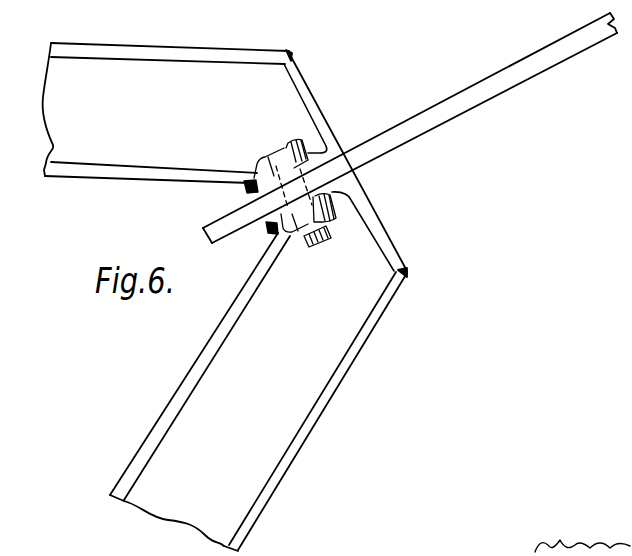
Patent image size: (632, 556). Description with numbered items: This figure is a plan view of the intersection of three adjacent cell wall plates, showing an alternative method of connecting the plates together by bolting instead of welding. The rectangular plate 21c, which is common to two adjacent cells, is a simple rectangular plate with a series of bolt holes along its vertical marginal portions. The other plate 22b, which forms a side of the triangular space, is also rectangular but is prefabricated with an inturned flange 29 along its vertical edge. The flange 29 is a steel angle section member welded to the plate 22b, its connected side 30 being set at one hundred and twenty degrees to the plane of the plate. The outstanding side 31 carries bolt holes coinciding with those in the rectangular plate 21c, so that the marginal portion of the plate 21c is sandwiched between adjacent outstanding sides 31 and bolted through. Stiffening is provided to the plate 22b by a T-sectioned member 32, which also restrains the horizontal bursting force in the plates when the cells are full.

The plate 22b is at (206, 49).
The rectangular plate 21c is at (452, 95).
The connected side 30 is at (374, 205).
The inturned flange 29 is at (391, 243).
The T-sectioned member 32 is at (192, 371).
The outstanding side 31 is at (262, 229).